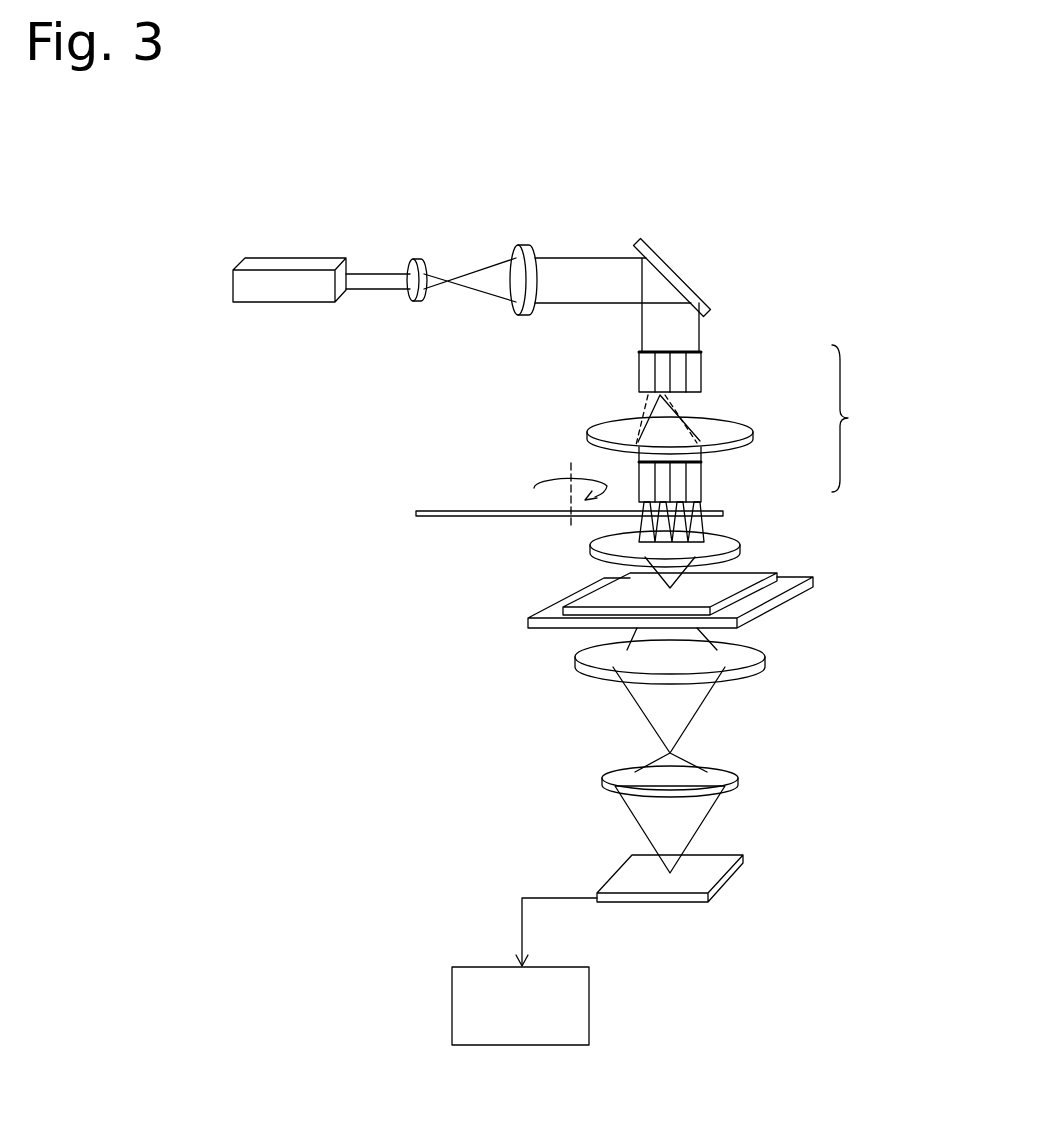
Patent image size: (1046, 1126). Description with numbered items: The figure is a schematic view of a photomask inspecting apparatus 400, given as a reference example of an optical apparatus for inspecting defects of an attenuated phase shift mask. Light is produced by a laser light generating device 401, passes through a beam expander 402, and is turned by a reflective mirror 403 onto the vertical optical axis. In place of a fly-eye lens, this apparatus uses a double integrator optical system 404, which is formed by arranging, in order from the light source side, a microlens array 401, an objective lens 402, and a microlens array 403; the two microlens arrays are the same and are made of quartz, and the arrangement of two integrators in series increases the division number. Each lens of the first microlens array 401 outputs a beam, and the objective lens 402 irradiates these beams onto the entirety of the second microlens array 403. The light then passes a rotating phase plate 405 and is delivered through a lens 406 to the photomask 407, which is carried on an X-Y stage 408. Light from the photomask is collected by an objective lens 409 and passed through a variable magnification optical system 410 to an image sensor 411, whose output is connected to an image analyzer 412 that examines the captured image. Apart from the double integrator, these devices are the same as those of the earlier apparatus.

The photomask inspecting apparatus 400 is at (603, 208).
The laser light generating device / microlens array 401 is at (298, 262).
The beam expander / objective lens 402 is at (543, 233).
The reflective mirror / microlens array 403 is at (685, 277).
The double integrator optical system 404 is at (871, 418).
The rotating phase plate 405 is at (456, 510).
The objective lens 406 is at (740, 541).
The photomask 407 is at (607, 598).
The X-Y stage 408 is at (813, 585).
The objective lens 409 is at (762, 656).
The variable magnification optical system 410 is at (740, 779).
The image sensor 411 is at (727, 878).
The image analyzer 412 is at (582, 1022).